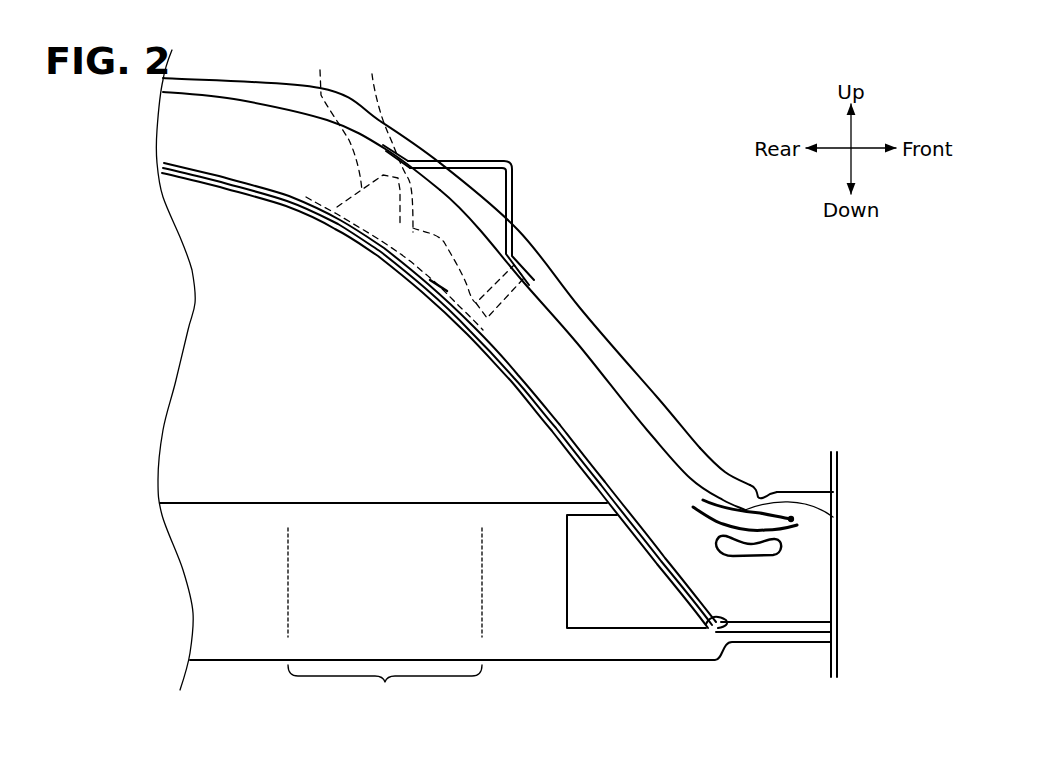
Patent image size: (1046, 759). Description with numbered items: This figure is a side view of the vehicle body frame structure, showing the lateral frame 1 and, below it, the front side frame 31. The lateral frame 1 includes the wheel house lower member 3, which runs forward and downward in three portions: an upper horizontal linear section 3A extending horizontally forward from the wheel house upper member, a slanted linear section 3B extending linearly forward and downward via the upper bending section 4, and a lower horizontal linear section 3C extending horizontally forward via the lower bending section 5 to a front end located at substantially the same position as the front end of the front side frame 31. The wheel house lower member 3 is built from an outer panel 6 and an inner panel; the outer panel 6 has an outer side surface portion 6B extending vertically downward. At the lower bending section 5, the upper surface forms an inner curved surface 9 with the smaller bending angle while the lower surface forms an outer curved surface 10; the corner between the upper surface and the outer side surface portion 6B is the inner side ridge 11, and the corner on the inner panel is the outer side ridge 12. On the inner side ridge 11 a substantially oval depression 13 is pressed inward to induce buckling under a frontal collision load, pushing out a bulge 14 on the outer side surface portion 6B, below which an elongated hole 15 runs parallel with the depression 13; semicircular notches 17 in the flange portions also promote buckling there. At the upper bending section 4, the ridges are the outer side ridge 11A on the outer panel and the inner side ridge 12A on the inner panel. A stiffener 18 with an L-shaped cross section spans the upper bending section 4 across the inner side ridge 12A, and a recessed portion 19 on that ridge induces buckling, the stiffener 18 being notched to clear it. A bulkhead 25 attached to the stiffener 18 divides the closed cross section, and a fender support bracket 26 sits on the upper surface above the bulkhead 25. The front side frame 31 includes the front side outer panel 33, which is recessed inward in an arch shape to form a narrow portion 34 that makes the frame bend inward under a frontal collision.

The lateral frame 1 is at (424, 108).
The wheel house lower member 3 is at (533, 110).
The upper horizontal linear section 3A is at (219, 61).
The slanted linear section 3B is at (543, 217).
The lower horizontal linear section 3C is at (797, 468).
The upper bending section 4 is at (410, 284).
The lower bending section 5 is at (740, 471).
The outer panel 6 is at (511, 327).
The outer side surface portion 6B is at (555, 402).
The inner curved surface 9 is at (749, 486).
The outer curved surface 10 is at (718, 655).
The inner side ridge 11 is at (717, 504).
The outer side ridge 11A is at (438, 162).
The outer side ridge 12 is at (668, 580).
The inner side ridge 12A is at (447, 292).
The depression 13 is at (790, 519).
The bulge 14 is at (798, 527).
The elongated hole 15 is at (723, 503).
The notch 17 is at (760, 491).
The stiffener 18 is at (321, 68).
The recessed portion 19 is at (372, 74).
The bulkhead 25 is at (527, 309).
The fender support bracket 26 is at (519, 161).
The front side frame 31 is at (296, 501).
The front side outer panel 33 is at (538, 627).
The narrow portion 34 is at (385, 621).